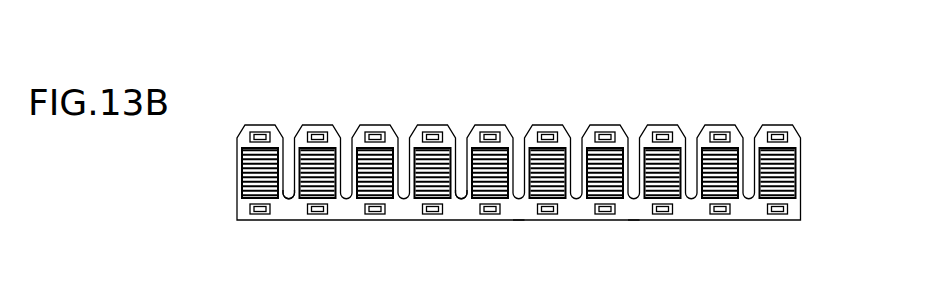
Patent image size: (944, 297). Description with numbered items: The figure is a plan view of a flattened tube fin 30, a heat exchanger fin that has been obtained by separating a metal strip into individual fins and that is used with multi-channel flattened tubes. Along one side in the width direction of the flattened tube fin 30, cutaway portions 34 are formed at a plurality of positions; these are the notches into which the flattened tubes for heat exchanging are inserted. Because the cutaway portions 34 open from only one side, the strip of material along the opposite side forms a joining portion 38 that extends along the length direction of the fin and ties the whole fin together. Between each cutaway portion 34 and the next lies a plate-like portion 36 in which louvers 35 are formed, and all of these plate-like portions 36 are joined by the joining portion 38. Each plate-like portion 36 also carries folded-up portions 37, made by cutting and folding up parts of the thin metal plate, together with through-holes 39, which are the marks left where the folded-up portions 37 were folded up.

The flattened tube fin 30 is at (553, 97).
The cutaway portion 34 is at (289, 195).
The louver 35 is at (252, 164).
The plate-like portion 36 is at (521, 204).
The folded-up portion 37 is at (653, 132).
The joining portion 38 is at (628, 212).
The through-hole 39 is at (375, 141).